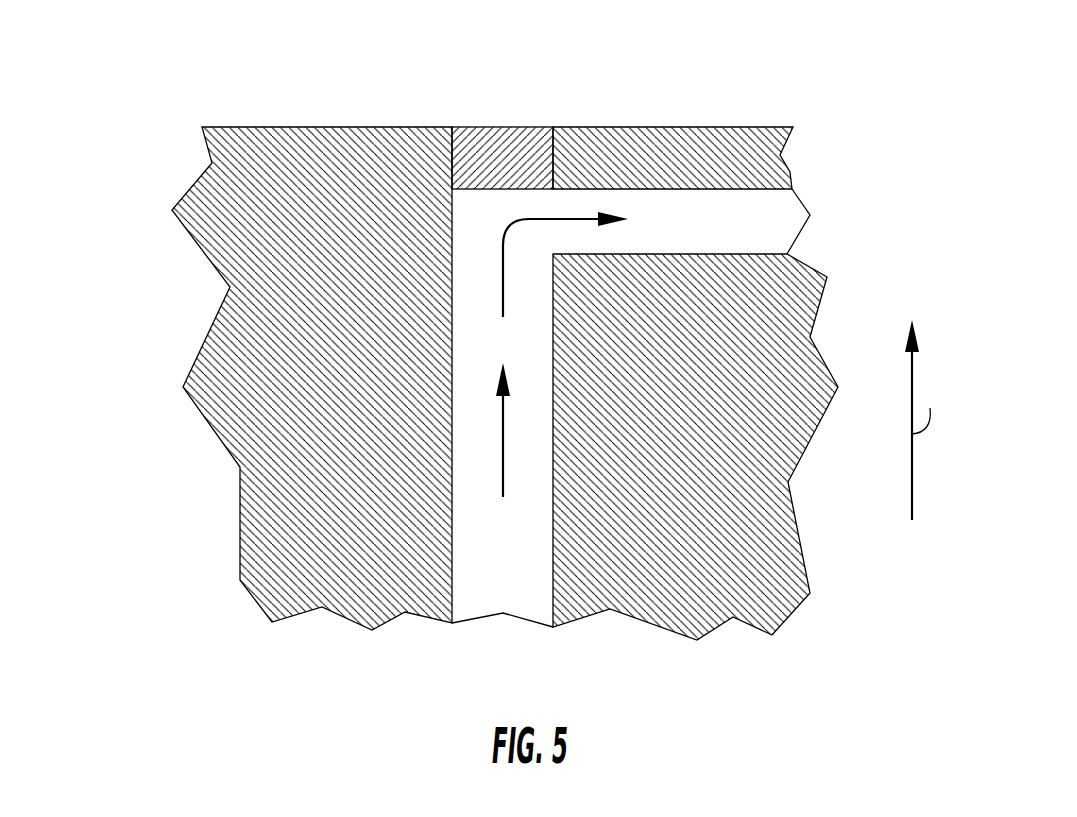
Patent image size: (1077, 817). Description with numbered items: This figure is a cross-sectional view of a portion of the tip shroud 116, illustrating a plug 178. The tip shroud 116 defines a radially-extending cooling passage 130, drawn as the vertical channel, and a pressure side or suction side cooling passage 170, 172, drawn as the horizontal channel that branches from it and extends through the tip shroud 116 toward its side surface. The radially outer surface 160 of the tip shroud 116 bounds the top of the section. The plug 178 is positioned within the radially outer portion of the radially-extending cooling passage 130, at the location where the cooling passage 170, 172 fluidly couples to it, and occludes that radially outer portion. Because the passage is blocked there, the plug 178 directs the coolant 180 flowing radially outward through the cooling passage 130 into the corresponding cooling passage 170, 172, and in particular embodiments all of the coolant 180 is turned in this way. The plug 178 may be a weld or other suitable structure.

The tip shroud 116 is at (114, 117).
The radially-extending cooling passage 130 is at (493, 607).
The radially outer surface 160 is at (337, 127).
The pressure side cooling passage 170 is at (768, 218).
The suction side cooling passage 172 is at (695, 447).
The plug 178 is at (515, 143).
The coolant 180 is at (503, 430).